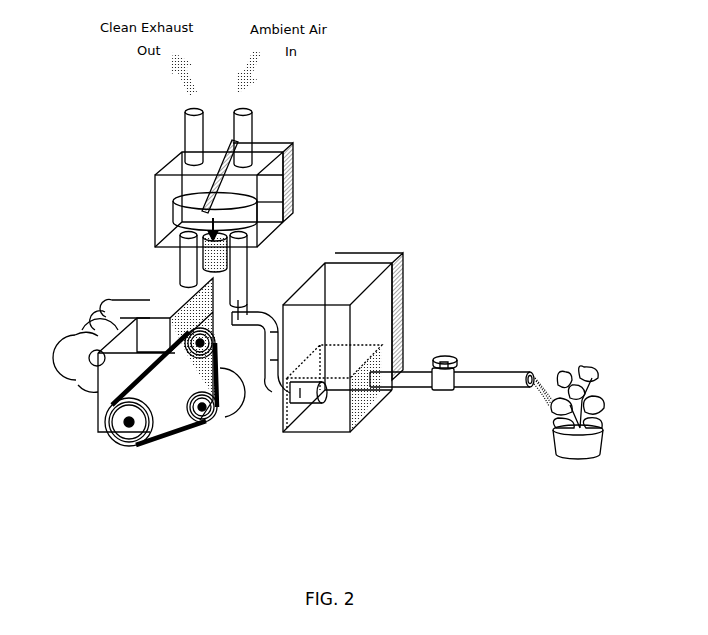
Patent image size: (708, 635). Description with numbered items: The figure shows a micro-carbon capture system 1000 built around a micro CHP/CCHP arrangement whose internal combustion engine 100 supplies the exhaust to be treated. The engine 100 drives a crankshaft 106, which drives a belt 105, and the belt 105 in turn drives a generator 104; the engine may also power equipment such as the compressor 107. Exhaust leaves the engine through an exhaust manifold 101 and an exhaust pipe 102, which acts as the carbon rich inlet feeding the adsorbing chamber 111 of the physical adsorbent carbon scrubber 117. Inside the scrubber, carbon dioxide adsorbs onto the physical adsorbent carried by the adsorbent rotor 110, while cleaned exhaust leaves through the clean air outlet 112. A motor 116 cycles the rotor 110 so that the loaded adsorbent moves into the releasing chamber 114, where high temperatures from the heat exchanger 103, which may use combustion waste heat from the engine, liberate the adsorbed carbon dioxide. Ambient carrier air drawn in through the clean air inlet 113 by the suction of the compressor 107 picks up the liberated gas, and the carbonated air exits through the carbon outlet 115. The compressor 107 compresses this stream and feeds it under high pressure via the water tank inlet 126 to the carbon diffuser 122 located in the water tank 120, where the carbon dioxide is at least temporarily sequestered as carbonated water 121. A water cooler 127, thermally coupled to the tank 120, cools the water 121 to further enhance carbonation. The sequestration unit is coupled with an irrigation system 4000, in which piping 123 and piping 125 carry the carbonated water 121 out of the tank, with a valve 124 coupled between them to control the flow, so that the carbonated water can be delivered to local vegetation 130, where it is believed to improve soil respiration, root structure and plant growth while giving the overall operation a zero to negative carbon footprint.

The system 1000 is at (578, 98).
The irrigation system 4000 is at (519, 350).
The internal combustion engine 100 is at (105, 370).
The exhaust manifold 101 is at (100, 311).
The exhaust pipe 102 is at (182, 280).
The heat exchanger 103 is at (292, 177).
The generator 104 is at (202, 413).
The belt 105 is at (168, 435).
The crankshaft 106 is at (122, 433).
The compressor 107 is at (243, 330).
The adsorbent rotor 110 is at (183, 218).
The adsorbing chamber 111 is at (172, 167).
The clean air outlet 112 is at (185, 127).
The clean air inlet 113 is at (253, 125).
The releasing chamber 114 is at (292, 157).
The carbon outlet 115 is at (240, 280).
The motor 116 is at (203, 255).
The physical adsorbent carbon scrubber 117 is at (275, 205).
The water tank 120 is at (345, 275).
The water 121 is at (380, 360).
The carbon diffuser 122 is at (310, 397).
The piping 123 is at (408, 383).
The valve 124 is at (455, 362).
The piping 125 is at (493, 383).
The water tank inlet 126 is at (257, 315).
The water cooler 127 is at (407, 280).
The vegetation 130 is at (597, 372).